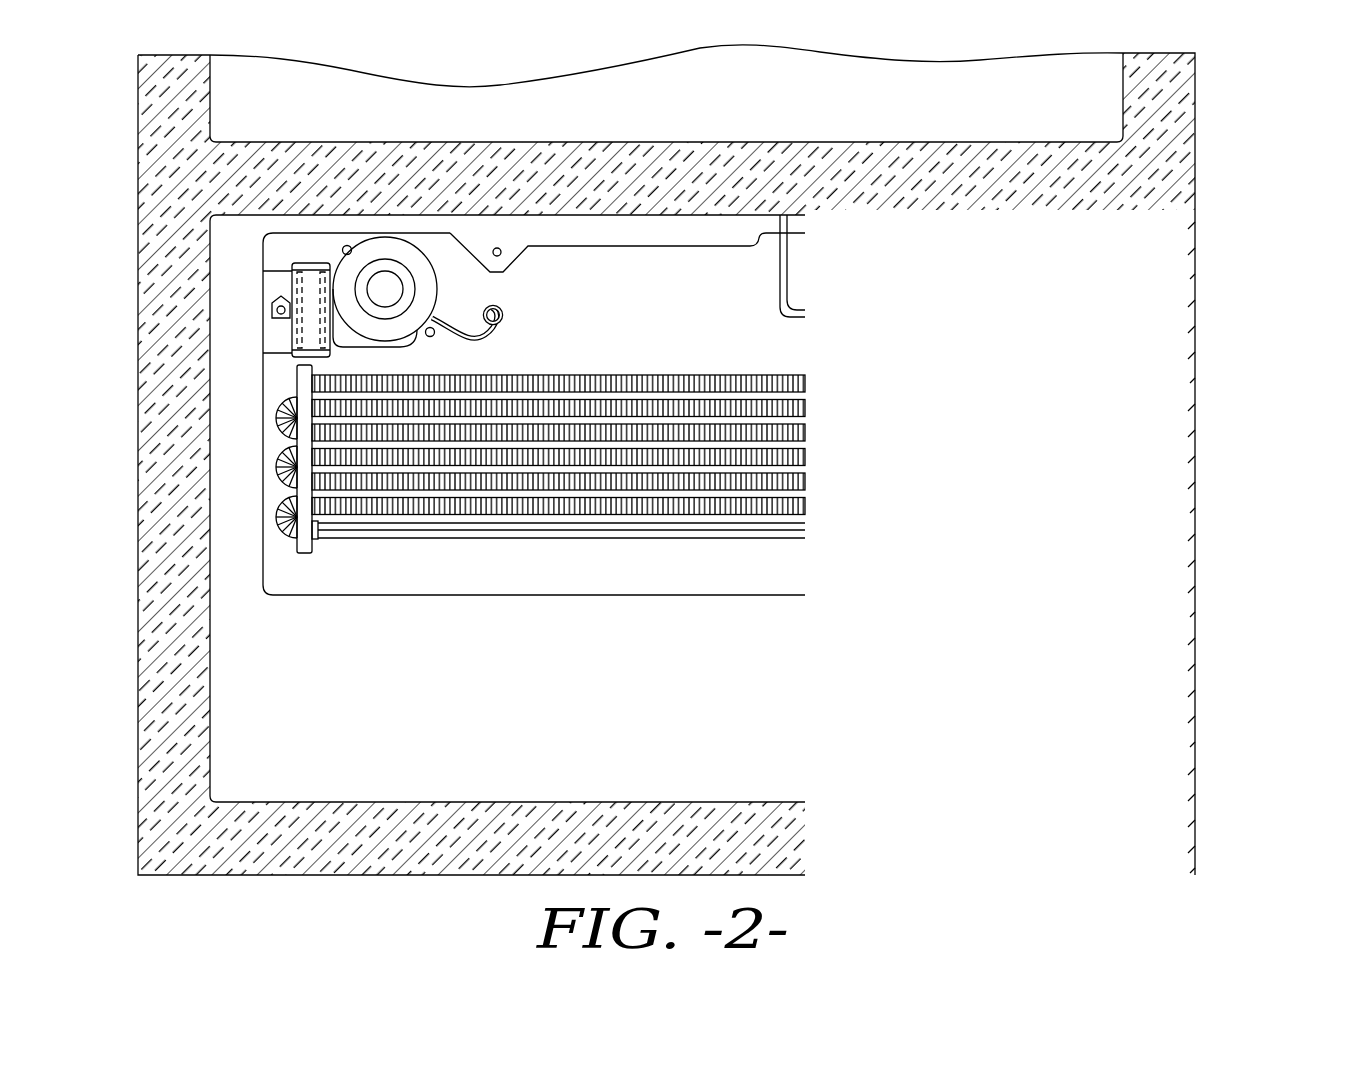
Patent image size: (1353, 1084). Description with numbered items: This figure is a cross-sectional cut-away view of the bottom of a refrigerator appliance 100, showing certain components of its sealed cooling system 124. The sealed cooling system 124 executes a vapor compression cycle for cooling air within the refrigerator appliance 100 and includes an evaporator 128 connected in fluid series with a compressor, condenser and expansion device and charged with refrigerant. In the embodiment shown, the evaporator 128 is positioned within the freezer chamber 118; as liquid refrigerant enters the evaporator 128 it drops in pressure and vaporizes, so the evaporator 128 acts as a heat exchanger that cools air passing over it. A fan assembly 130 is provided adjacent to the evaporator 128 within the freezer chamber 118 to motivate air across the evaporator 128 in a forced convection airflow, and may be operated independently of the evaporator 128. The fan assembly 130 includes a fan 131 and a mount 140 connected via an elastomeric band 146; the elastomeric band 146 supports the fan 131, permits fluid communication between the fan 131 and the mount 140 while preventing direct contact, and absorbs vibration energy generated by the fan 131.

The refrigerator appliance 100 is at (1255, 175).
The freezer chamber 118 is at (240, 102).
The sealed cooling system 124 is at (677, 613).
The evaporator 128 is at (283, 537).
The fan assembly 130 is at (432, 247).
The fan 131 is at (383, 250).
The mount 140 is at (293, 332).
The elastomeric band 146 is at (305, 305).